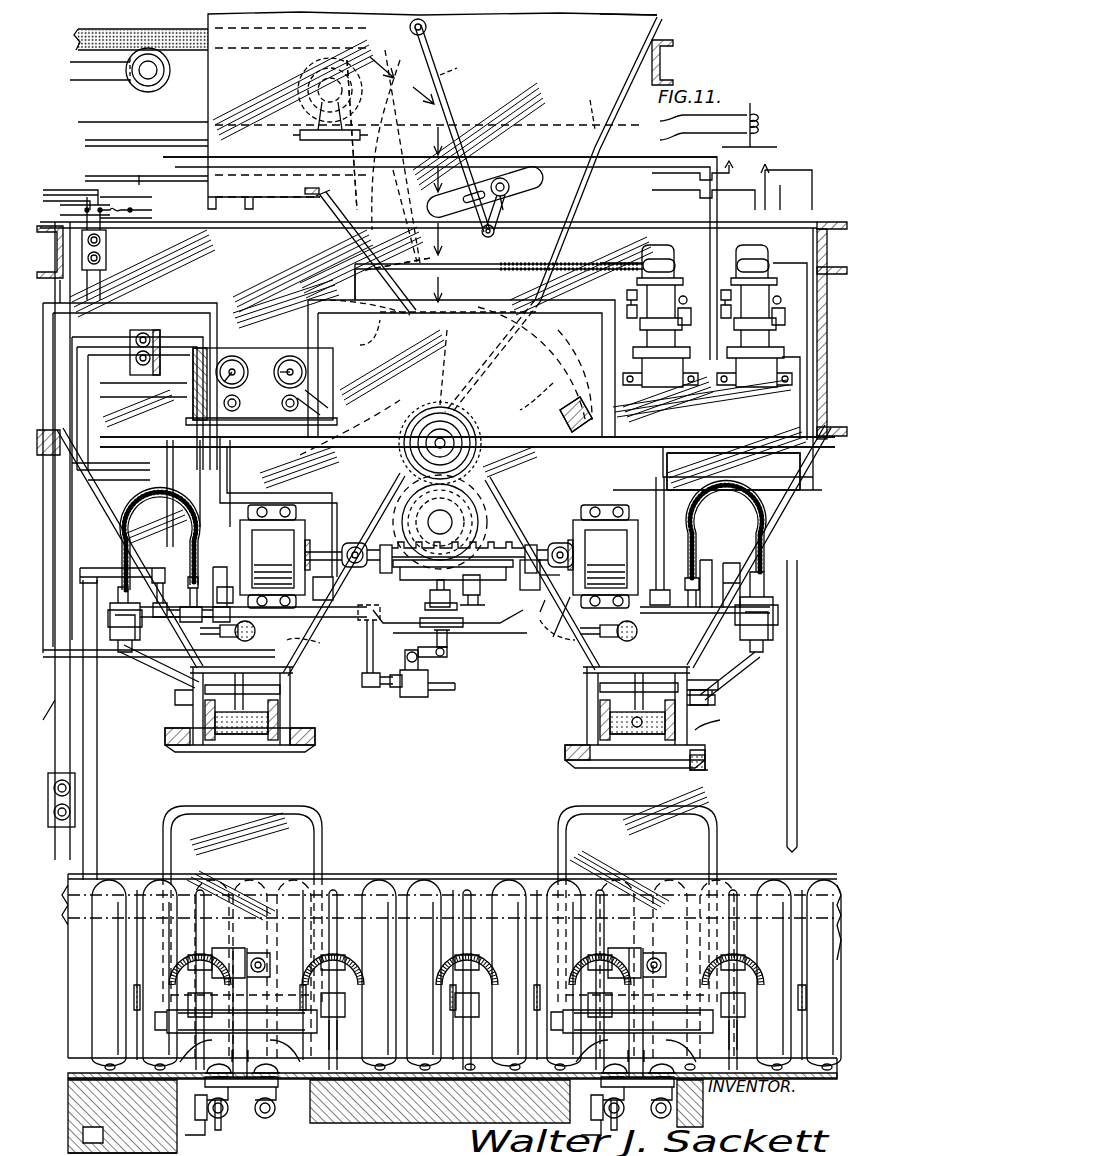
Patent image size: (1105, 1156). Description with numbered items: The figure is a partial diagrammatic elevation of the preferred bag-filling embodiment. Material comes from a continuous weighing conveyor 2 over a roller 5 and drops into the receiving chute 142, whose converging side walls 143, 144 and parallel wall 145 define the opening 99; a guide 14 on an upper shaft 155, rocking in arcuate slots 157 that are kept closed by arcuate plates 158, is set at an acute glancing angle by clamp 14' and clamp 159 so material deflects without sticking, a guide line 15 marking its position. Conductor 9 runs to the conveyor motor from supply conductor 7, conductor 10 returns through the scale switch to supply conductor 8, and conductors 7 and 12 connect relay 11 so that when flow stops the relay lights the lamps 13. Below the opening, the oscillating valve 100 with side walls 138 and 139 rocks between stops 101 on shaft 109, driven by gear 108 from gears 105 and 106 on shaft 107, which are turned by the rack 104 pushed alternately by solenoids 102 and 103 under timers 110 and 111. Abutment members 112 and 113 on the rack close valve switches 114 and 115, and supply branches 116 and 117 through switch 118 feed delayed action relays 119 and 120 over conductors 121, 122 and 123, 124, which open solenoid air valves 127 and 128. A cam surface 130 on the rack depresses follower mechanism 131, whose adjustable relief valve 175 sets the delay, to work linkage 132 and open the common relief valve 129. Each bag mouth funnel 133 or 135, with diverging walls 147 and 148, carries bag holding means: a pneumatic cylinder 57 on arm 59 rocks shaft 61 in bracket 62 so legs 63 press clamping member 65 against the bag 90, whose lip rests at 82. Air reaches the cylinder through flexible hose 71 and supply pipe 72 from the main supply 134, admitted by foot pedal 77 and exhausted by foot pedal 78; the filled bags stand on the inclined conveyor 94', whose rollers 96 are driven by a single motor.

The continuous weighing conveyor 2 is at (385, 100).
The roller 5 is at (170, 73).
The supply conductor 7 is at (180, 190).
The supply conductor 8 is at (140, 237).
The conductor 9 is at (78, 205).
The conductor 10 is at (66, 188).
The relay 11 is at (757, 128).
The conductor 12 is at (438, 149).
The lamp 13 is at (658, 645).
The guide 14 is at (464, 68).
The clamp 14' is at (433, 254).
The guide 15 is at (380, 133).
The pneumatic cylinder 57 is at (775, 610).
The arm 59 is at (730, 668).
The shaft 61 is at (636, 685).
The bracket 62 is at (600, 680).
The leg 63 is at (598, 704).
The curved bag clamping member 65 is at (580, 758).
The flexible hose 71 is at (768, 545).
The air supply pipe 72 is at (797, 715).
The foot pedal 77 is at (605, 1060).
The foot pedal 78 is at (738, 1028).
The lip 82 is at (710, 762).
The bag 90 is at (660, 805).
The inclined conveyor 94' is at (451, 944).
The wheel 96 is at (350, 968).
The opening 99 is at (395, 316).
The oscillating valve 100 is at (570, 350).
The stop 101 is at (370, 418).
The solenoid 102 is at (275, 556).
The solenoid 103 is at (603, 556).
The rack 104 is at (500, 542).
The gear 105 is at (478, 520).
The gear 106 is at (482, 508).
The shaft 107 is at (452, 512).
The gear 108 is at (440, 407).
The shaft 109 is at (445, 437).
The timer 110 is at (238, 358).
The timer 111 is at (290, 356).
The abutment member 112 is at (450, 577).
The abutment member 113 is at (536, 592).
The valve switch 114 is at (439, 563).
The valve switch 115 is at (553, 637).
The supply branch 116 is at (290, 437).
The supply branch 117 is at (280, 450).
The switch 118 is at (140, 328).
The delayed action relay 119 is at (680, 256).
The delayed action relay 120 is at (770, 255).
The conductor 121 is at (356, 355).
The conductor 122 is at (387, 336).
The conductor 123 is at (750, 482).
The conductor 124 is at (795, 490).
The solenoid air valve 127 is at (190, 577).
The solenoid air valve 128 is at (668, 590).
The common relief valve 129 is at (414, 700).
The cam surface 130 is at (482, 585).
The follower mechanism 131 is at (432, 612).
The linkage 132 is at (448, 653).
The bag mouth funnel 133 is at (719, 705).
The main supply 134 is at (292, 1155).
The bag mouth funnel 135 is at (366, 688).
The side wall 138 is at (452, 362).
The side wall 139 is at (556, 405).
The receiving chute 142 is at (603, 32).
The converging side wall 143 is at (345, 190).
The converging side wall 144 is at (583, 107).
The parallel wall 145 is at (522, 61).
The diverging side wall 147 is at (333, 629).
The diverging side wall 148 is at (578, 640).
The upper shaft 155 is at (427, 27).
The arcuate slot 157 is at (545, 178).
The arcuate plate 158 is at (470, 232).
The clamp 159 is at (510, 204).
The adjustable relief valve 175 is at (462, 612).